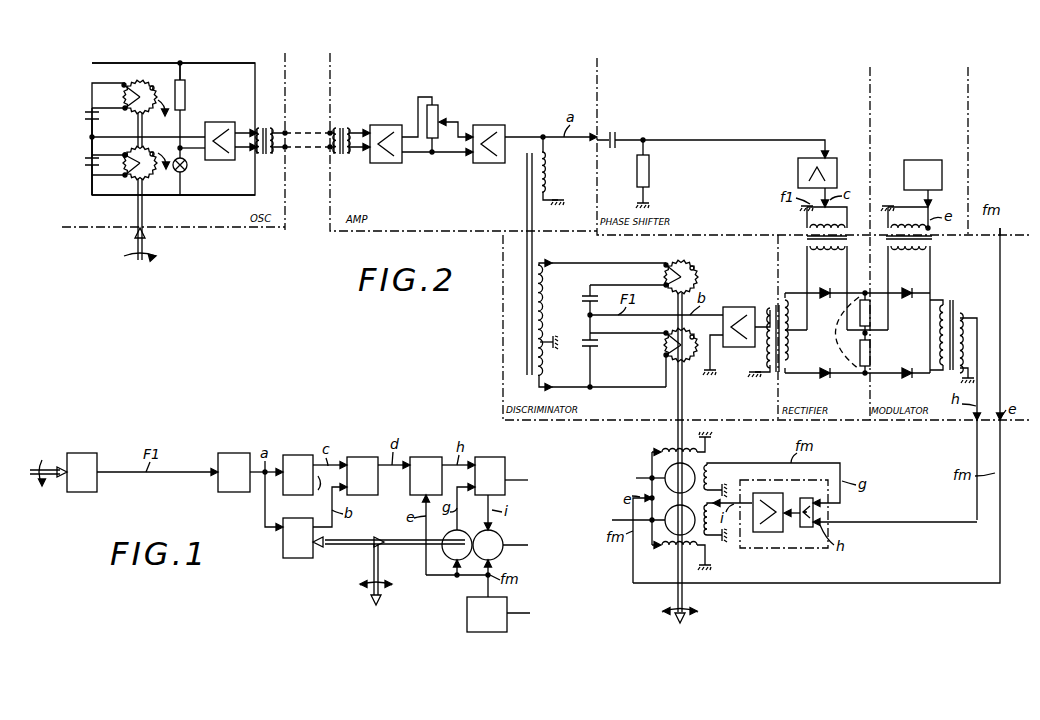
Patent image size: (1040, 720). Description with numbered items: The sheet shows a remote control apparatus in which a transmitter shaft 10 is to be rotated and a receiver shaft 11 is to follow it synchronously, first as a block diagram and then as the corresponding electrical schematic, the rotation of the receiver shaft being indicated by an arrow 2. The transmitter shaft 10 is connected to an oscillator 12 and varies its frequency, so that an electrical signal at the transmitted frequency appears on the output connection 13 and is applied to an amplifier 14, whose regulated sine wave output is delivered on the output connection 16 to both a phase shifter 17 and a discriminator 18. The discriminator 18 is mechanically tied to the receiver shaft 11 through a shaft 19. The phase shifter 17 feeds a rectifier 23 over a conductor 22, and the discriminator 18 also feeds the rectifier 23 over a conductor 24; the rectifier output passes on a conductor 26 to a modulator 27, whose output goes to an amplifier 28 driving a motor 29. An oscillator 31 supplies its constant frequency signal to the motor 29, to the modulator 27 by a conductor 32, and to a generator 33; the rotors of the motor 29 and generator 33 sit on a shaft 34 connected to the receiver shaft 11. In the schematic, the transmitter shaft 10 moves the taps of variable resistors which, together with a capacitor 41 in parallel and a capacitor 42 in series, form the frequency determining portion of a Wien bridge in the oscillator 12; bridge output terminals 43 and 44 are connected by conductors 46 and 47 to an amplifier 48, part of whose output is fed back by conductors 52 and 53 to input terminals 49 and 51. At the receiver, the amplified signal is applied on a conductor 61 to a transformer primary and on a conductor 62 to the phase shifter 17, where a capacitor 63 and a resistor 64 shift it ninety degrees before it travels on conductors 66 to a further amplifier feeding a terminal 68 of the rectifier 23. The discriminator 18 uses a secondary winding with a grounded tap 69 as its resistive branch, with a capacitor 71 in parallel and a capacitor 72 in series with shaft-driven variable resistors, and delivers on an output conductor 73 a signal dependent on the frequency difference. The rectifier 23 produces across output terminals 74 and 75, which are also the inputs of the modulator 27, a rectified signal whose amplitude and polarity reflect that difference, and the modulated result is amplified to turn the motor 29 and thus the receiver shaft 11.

In FIG. 1, the output shaft rotation 2 is at (370, 592).
In FIG. 2, the transmitter shaft 10 is at (144, 246).
In FIG. 1, the transmitter shaft 10 is at (45, 480).
In FIG. 2, the receiver shaft 11 is at (684, 598).
In FIG. 1, the receiver shaft 11 is at (374, 568).
In FIG. 2, the oscillator 12 is at (272, 232).
In FIG. 1, the oscillator 12 is at (84, 453).
In FIG. 1, the output connection 13 is at (116, 476).
In FIG. 2, the amplifier 14 is at (342, 230).
In FIG. 1, the amplifier 14 is at (238, 453).
In FIG. 1, the output connection 16 is at (256, 490).
In FIG. 2, the phase shifter 17 is at (731, 236).
In FIG. 1, the phase shifter 17 is at (298, 455).
In FIG. 2, the discriminator 18 is at (521, 422).
In FIG. 1, the discriminator 18 is at (283, 547).
In FIG. 1, the shaft 19 is at (326, 545).
In FIG. 1, the conductor 22 is at (303, 507).
In FIG. 2, the rectifier 23 is at (829, 425).
In FIG. 1, the rectifier 23 is at (360, 495).
In FIG. 1, the conductor 24 is at (338, 527).
In FIG. 1, the conductor 26 is at (389, 470).
In FIG. 2, the modulator 27 is at (902, 425).
In FIG. 1, the modulator 27 is at (432, 457).
In FIG. 2, the amplifier 28 is at (820, 548).
In FIG. 1, the amplifier 28 is at (498, 476).
In FIG. 2, the motor 29 is at (642, 520).
In FIG. 1, the motor 29 is at (513, 527).
In FIG. 2, the oscillator 31 is at (922, 160).
In FIG. 1, the oscillator 31 is at (510, 603).
In FIG. 1, the conductor 32 is at (426, 580).
In FIG. 2, the generator 33 is at (654, 478).
In FIG. 1, the generator 33 is at (467, 532).
In FIG. 1, the shaft 34 is at (412, 547).
In FIG. 2, the capacitor 41 is at (85, 162).
In FIG. 2, the capacitor 42 is at (85, 112).
In FIG. 2, the output terminal 43 is at (92, 128).
In FIG. 2, the output terminal 44 is at (180, 135).
In FIG. 2, the conductor 46 is at (198, 136).
In FIG. 2, the conductor 47 is at (178, 171).
In FIG. 2, the amplifier 48 is at (224, 122).
In FIG. 2, the input terminal 49 is at (180, 63).
In FIG. 2, the input terminal 51 is at (180, 195).
In FIG. 2, the conductor 52 is at (237, 63).
In FIG. 2, the conductor 53 is at (252, 195).
In FIG. 2, the conductor 61 is at (518, 142).
In FIG. 2, the conductor 62 is at (557, 138).
In FIG. 2, the capacitor 63 is at (610, 147).
In FIG. 2, the resistor 64 is at (650, 170).
In FIG. 2, the conductors 66 is at (770, 126).
In FIG. 2, the terminal 68 is at (873, 333).
In FIG. 2, the grounded tap 69 is at (548, 346).
In FIG. 2, the capacitor 71 is at (602, 347).
In FIG. 2, the capacitor 72 is at (588, 296).
In FIG. 2, the output conductor 73 is at (592, 316).
In FIG. 2, the output terminal 74 is at (864, 292).
In FIG. 2, the output terminal 75 is at (865, 375).